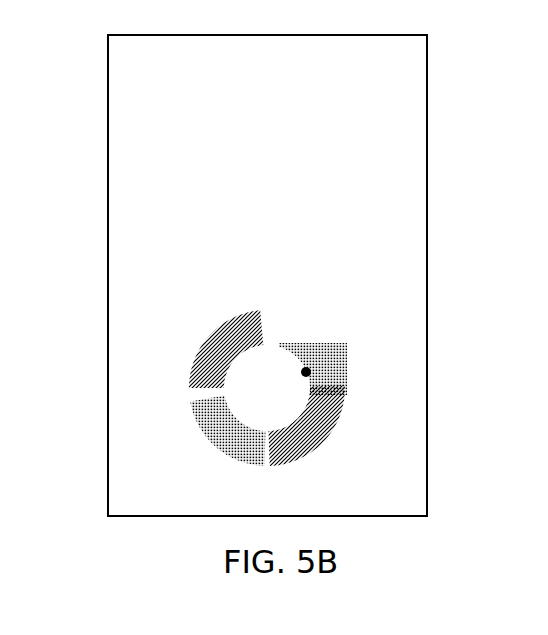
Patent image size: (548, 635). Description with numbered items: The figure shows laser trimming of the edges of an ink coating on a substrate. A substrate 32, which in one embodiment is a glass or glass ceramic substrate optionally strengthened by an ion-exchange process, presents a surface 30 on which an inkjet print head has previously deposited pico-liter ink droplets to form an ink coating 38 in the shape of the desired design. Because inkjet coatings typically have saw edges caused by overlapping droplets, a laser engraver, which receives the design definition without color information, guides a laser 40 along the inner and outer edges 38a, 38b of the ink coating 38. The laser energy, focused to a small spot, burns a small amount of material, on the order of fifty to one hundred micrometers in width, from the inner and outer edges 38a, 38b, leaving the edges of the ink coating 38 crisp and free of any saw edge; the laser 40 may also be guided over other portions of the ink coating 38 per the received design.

The surface 30 is at (410, 137).
The substrate 32 is at (108, 152).
The ink coating 38 is at (237, 382).
The inner edge 38a is at (242, 425).
The outer edge 38b is at (192, 362).
The laser 40 is at (309, 368).